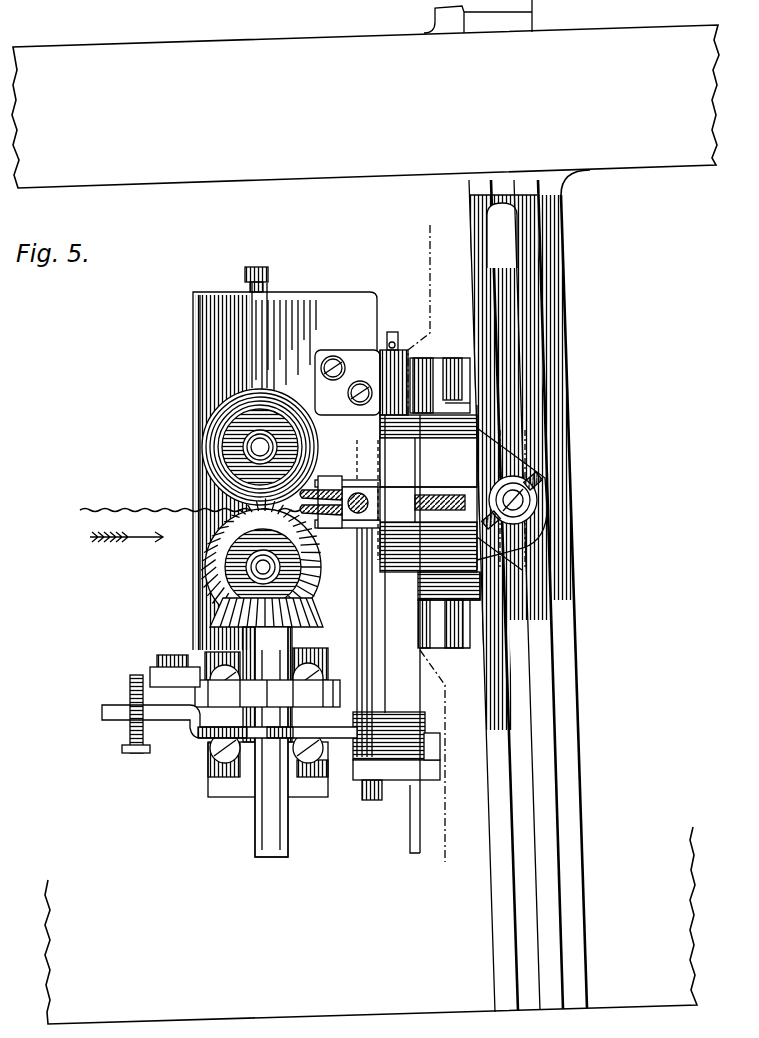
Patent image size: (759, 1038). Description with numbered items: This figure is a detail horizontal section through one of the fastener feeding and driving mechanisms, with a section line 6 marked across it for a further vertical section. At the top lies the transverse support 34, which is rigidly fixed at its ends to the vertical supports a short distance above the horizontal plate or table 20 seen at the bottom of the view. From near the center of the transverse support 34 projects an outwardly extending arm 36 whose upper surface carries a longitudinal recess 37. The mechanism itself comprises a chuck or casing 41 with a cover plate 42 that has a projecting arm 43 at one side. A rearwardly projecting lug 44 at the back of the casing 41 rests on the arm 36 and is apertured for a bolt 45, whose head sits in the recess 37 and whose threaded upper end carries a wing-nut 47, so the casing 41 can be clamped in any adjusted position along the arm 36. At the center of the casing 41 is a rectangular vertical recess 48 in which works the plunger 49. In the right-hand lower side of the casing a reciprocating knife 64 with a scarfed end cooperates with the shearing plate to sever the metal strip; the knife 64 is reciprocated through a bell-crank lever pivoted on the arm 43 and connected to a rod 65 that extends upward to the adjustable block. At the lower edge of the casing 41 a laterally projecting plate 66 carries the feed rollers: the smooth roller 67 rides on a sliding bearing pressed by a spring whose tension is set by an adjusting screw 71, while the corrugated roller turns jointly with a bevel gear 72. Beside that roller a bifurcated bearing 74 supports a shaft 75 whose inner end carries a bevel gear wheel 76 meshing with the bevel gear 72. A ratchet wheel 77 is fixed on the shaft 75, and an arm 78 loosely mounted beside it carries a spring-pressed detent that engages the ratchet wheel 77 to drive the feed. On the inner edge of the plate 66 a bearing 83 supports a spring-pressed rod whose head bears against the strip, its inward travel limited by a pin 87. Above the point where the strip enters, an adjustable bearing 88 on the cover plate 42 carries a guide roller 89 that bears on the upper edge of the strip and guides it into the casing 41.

The section line 6— 6 is at (432, 547).
The horizontal plate or table 20 is at (371, 925).
The transverse support 34 is at (365, 106).
The outwardly projecting member or arm 36 is at (527, 15).
The longitudinal recess 37 is at (525, 595).
The chuck or casing 41 is at (430, 503).
The cover plate 42 is at (428, 455).
The projecting arm 43 is at (402, 634).
The rearwardly projecting lug 44 is at (493, 448).
The bolt 45 is at (538, 497).
The wing-nut 47 is at (545, 478).
The rectangular vertical recess 48 is at (417, 500).
The plunger 49 is at (440, 494).
The reciprocating knife 64 is at (357, 631).
The rod 65 is at (361, 453).
The laterally projecting plate 66 is at (205, 815).
The smooth feed roller 67 is at (311, 447).
The adjusting screw 71 is at (256, 269).
The bevel gear 72 is at (272, 562).
The bifurcated bearing 74 is at (206, 656).
The shaft 75 is at (267, 752).
The bevel gear wheel 76 is at (313, 617).
The ratchet wheel 77 is at (267, 693).
The arm 78 is at (106, 705).
The bearing 83 is at (347, 374).
The pin 87 is at (399, 331).
The adjustable bearing 88 is at (376, 480).
The guide roller 89 is at (333, 480).